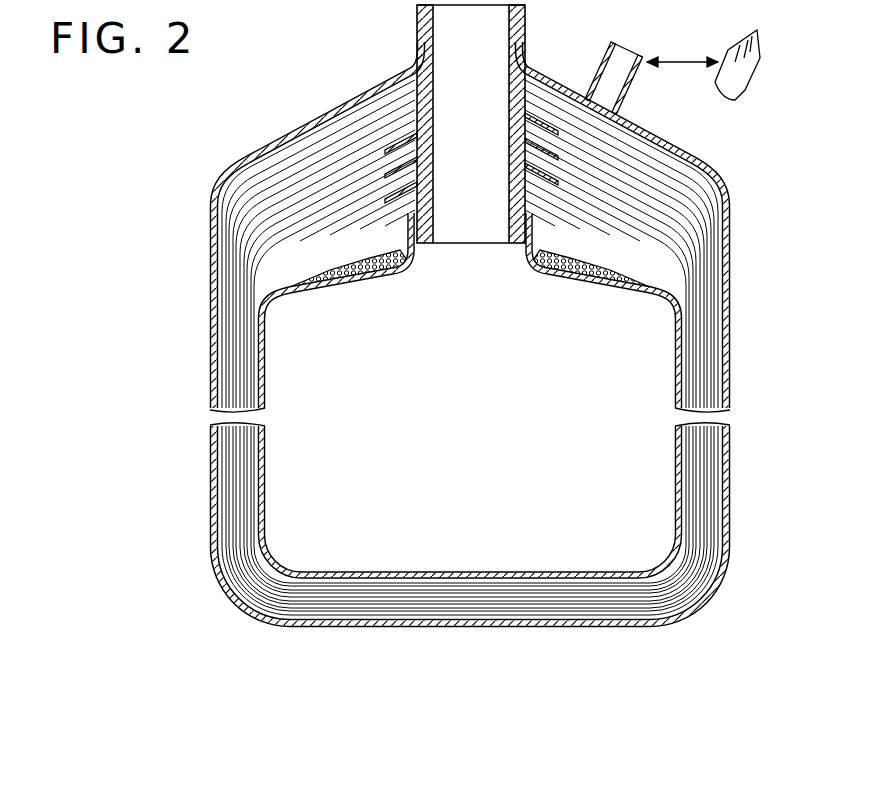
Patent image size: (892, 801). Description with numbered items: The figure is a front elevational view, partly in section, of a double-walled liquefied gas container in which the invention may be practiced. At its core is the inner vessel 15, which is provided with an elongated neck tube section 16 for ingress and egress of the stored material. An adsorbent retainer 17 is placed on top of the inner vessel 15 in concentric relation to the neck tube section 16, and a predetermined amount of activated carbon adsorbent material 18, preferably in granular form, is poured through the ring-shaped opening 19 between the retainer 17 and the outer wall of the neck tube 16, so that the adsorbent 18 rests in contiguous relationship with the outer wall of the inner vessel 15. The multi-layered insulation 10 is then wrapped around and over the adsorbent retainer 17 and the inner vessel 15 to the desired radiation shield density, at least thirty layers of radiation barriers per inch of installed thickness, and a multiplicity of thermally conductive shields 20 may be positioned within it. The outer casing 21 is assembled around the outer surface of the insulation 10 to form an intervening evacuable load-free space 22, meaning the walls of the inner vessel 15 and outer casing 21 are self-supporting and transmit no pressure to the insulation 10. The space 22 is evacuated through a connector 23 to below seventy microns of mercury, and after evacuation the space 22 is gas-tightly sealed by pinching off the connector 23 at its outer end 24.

The multi-layered insulation 10 is at (710, 372).
The inner vessel 15 is at (262, 305).
The neck tube section 16 is at (420, 75).
The adsorbent retainer 17 is at (307, 258).
The activated carbon adsorbent material 18 is at (352, 257).
The ring-shaped opening 19 is at (408, 238).
The thermally conductive shields 20 is at (535, 122).
The outer casing 21 is at (730, 282).
The evacuable load-free space 22 is at (708, 180).
The connector 23 is at (600, 62).
The outer end of connector 24 is at (735, 75).